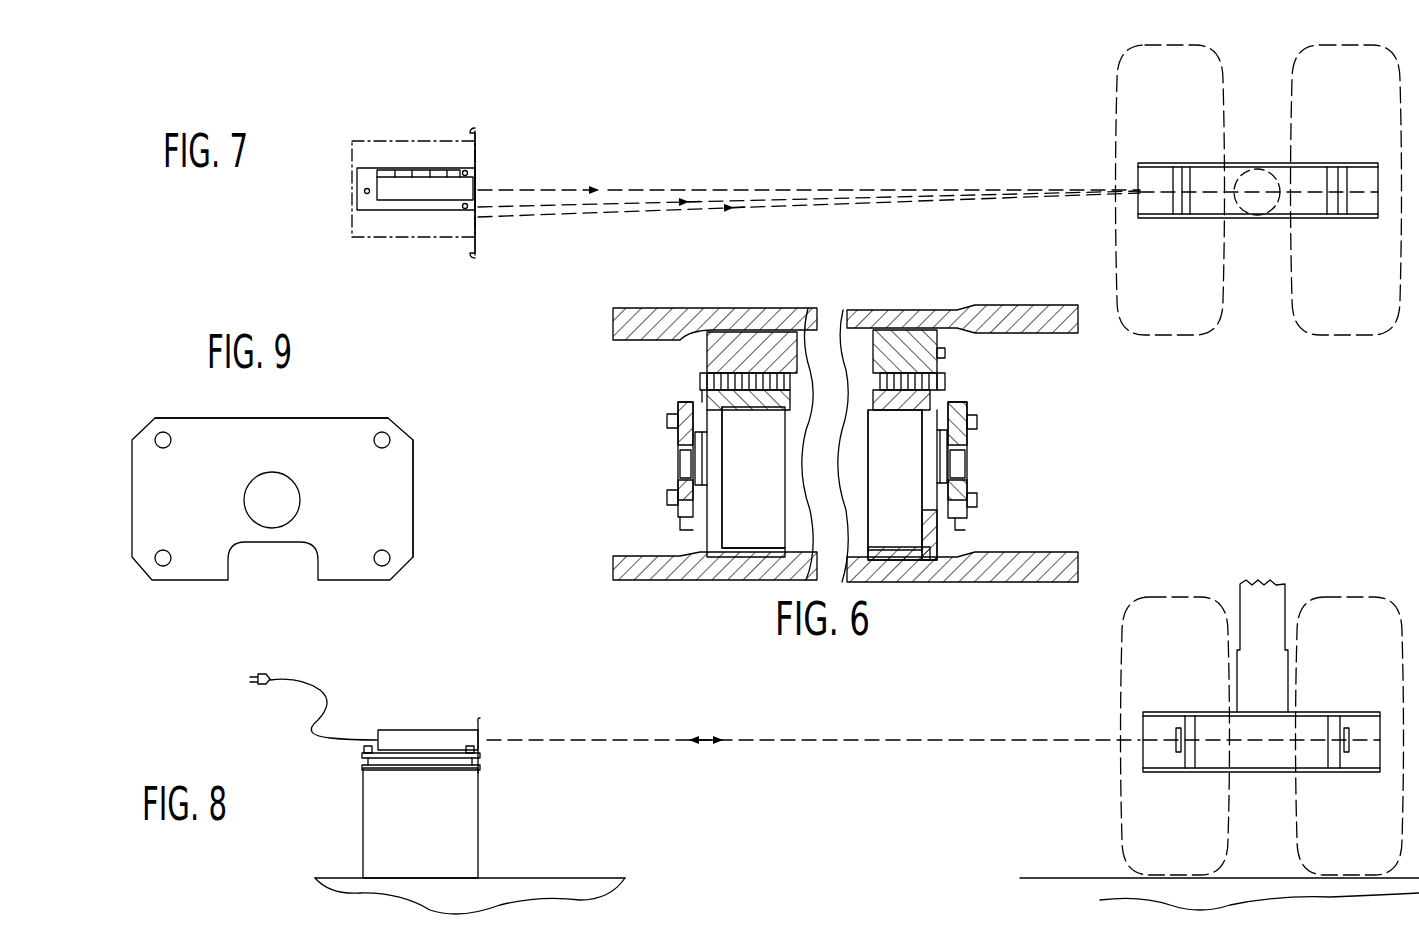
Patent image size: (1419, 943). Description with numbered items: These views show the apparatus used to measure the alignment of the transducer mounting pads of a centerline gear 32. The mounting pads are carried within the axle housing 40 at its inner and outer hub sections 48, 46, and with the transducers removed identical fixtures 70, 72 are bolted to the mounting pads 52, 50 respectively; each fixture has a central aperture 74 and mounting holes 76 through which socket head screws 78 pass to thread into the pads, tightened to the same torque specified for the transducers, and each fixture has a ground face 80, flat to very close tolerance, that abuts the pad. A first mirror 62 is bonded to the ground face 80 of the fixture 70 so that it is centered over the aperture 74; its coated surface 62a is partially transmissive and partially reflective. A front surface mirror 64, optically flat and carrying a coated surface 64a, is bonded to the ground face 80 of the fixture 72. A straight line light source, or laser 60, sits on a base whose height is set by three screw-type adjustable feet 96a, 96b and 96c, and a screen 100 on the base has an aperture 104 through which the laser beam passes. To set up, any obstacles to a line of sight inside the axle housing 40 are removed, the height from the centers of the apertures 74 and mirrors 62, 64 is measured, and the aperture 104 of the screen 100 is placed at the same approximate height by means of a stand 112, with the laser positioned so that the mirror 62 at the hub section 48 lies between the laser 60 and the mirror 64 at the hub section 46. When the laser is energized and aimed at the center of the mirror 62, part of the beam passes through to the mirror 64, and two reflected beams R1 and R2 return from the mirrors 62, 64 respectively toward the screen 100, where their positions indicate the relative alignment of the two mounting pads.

In FIG. 7, the centerline gear 32 is at (1270, 124).
In FIG. 8, the centerline gear 32 is at (1270, 816).
In FIG. 7, the axle housing 40 is at (1285, 218).
In FIG. 6, the axle housing 40 is at (740, 580).
In FIG. 8, the axle housing 40 is at (1218, 772).
In FIG. 7, the outer wheel hub 46 is at (1330, 178).
In FIG. 6, the outer wheel hub 46 is at (905, 332).
In FIG. 8, the outer wheel hub 46 is at (1340, 722).
In FIG. 7, the inner wheel hub 48 is at (1186, 178).
In FIG. 6, the inner wheel hub 48 is at (747, 350).
In FIG. 8, the inner wheel hub 48 is at (1190, 720).
In FIG. 6, the transducer mounting pad 50 is at (945, 390).
In FIG. 6, the transducer mounting pad 52 is at (700, 380).
In FIG. 7, the laser 60 is at (432, 172).
In FIG. 8, the laser 60 is at (428, 747).
In FIG. 7, the first mirror 62 is at (1173, 178).
In FIG. 6, the first mirror 62 is at (700, 448).
In FIG. 8, the first mirror 62 is at (1176, 730).
In FIG. 6, the coated surface 62a is at (680, 480).
In FIG. 7, the front surface mirror 64 is at (1348, 178).
In FIG. 6, the front surface mirror 64 is at (938, 445).
In FIG. 8, the front surface mirror 64 is at (1347, 728).
In FIG. 6, the coated surface 64a is at (968, 475).
In FIG. 6, the fixture 70 is at (676, 405).
In FIG. 9, the fixture 70 is at (288, 410).
In FIG. 6, the fixture 72 is at (968, 404).
In FIG. 6, the aperture 74 is at (680, 460).
In FIG. 9, the aperture 74 is at (255, 475).
In FIG. 9, the mounting hole 76 is at (163, 433).
In FIG. 6, the socket head screw 78 is at (666, 421).
In FIG. 6, the ground face 80 is at (720, 487).
In FIG. 9, the ground face 80 is at (390, 498).
In FIG. 7, the adjustable foot 96a is at (365, 193).
In FIG. 8, the adjustable foot 96a is at (366, 750).
In FIG. 7, the adjustable foot 96b is at (465, 170).
In FIG. 7, the adjustable foot 96c is at (465, 209).
In FIG. 8, the adjustable foot 96c is at (470, 745).
In FIG. 7, the screen 100 is at (478, 143).
In FIG. 7, the aperture 104 is at (478, 186).
In FIG. 8, the stand 112 is at (462, 808).
In FIG. 7, the reflected beam R1 is at (780, 207).
In FIG. 7, the reflected beam R2 is at (770, 201).